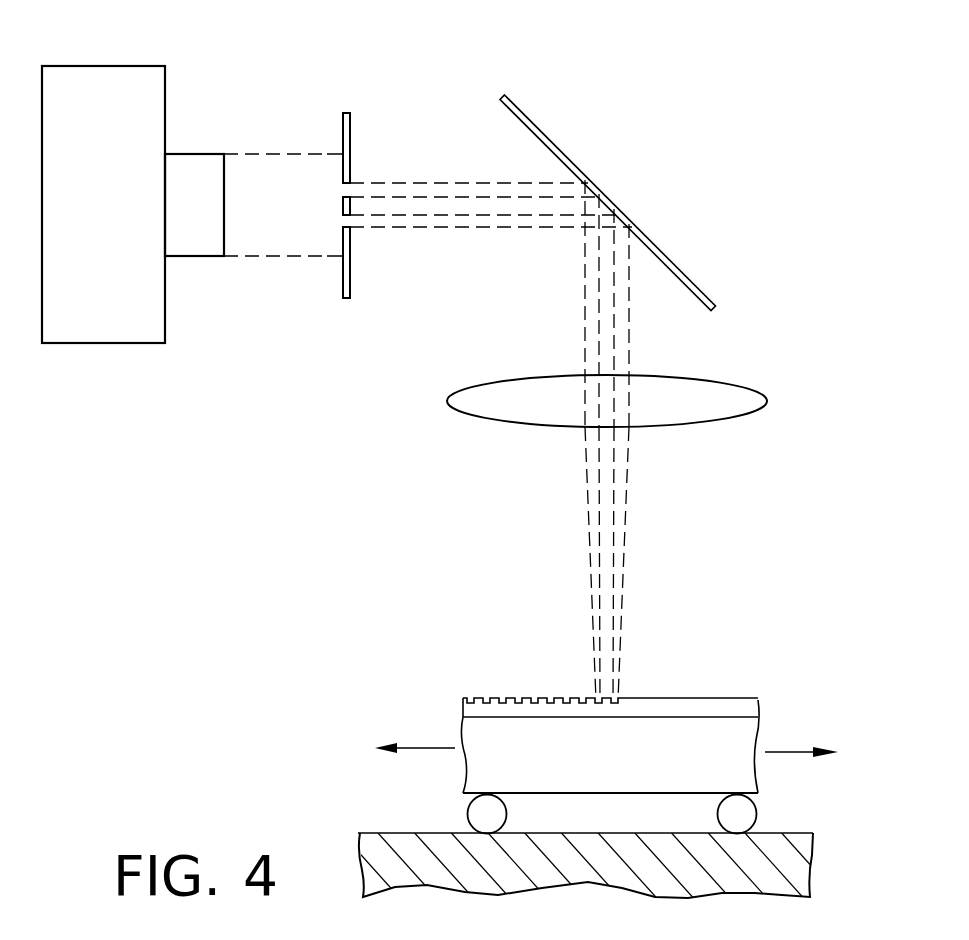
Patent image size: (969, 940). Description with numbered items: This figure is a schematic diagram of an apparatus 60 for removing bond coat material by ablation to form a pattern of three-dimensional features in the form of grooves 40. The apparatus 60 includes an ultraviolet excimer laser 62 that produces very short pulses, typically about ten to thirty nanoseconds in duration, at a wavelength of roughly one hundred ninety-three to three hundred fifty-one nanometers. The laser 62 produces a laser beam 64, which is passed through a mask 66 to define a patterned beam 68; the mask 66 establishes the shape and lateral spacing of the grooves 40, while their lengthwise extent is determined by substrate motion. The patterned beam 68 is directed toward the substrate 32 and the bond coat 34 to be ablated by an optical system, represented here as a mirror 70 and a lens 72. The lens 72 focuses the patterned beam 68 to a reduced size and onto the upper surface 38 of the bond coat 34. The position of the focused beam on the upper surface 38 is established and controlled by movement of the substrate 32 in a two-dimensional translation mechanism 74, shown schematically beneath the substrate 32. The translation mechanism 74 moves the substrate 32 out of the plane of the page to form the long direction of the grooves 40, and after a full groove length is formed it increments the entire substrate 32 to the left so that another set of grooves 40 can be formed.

The apparatus 60 is at (307, 86).
The ultraviolet excimer laser 62 is at (185, 257).
The laser beam 64 is at (310, 258).
The mask 66 is at (350, 287).
The patterned beam 68 is at (437, 228).
The mirror 70 is at (545, 133).
The lens 72 is at (487, 378).
The substrate 32 is at (547, 777).
The bond coat 34 is at (470, 712).
The upper surface 38 is at (494, 697).
The grooves 40 is at (565, 703).
The translation mechanism 74 is at (470, 814).